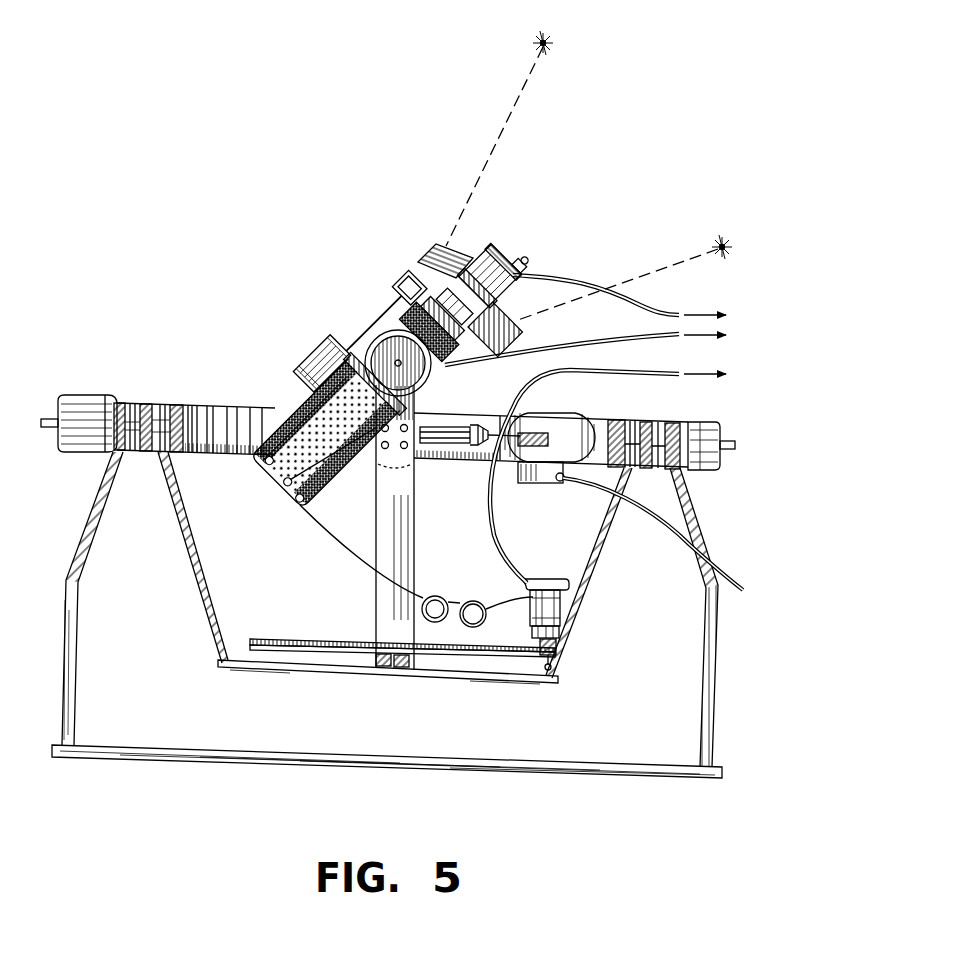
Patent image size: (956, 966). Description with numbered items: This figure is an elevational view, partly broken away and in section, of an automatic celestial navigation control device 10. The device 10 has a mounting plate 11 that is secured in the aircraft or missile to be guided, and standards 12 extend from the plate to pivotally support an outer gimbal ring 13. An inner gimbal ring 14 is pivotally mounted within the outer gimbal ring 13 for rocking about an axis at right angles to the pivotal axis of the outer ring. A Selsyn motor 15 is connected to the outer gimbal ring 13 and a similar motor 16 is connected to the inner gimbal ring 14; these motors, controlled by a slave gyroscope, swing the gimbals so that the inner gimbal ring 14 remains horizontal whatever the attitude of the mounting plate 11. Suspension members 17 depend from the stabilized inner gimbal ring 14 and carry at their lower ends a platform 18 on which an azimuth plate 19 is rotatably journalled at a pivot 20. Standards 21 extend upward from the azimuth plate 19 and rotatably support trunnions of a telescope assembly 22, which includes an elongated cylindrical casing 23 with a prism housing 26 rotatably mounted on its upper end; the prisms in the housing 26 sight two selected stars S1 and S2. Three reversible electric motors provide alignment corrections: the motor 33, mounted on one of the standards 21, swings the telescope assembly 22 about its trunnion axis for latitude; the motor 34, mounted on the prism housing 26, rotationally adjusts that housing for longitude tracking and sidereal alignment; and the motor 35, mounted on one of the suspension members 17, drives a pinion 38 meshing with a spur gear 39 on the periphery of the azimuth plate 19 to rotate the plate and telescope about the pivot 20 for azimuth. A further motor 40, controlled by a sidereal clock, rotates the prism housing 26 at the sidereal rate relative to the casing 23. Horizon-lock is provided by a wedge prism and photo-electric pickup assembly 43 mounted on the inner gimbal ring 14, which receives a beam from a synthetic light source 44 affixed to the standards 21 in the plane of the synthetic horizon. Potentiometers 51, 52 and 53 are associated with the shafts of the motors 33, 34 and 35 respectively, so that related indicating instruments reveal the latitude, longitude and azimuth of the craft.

The automatic celestial navigation control device 10 is at (399, 363).
The mounting plate 11 is at (258, 758).
The standards 12 is at (90, 520).
The outer gimbal ring 13 is at (662, 423).
The inner gimbal ring 14 is at (617, 427).
The Selsyn motor 15 is at (90, 398).
The Selsyn motor 16 is at (420, 409).
The suspension members 17 is at (183, 518).
The platform 18 is at (248, 662).
The azimuth plate 19 is at (263, 640).
The pivot 20 is at (403, 665).
The standards 21 is at (412, 528).
The telescope assembly 22 is at (378, 252).
The cylindrical casing 23 is at (432, 368).
The prism housing 26 is at (452, 246).
The reversible electric motor 33 is at (360, 350).
The reversible electric motor 34 is at (478, 262).
The reversible electric motor 35 is at (552, 634).
The pinion 38 is at (553, 648).
The spur gear 39 is at (470, 655).
The motor 40 is at (313, 357).
The wedge prism and photo-electric pickup assembly 43 is at (569, 412).
The synthetic light source 44 is at (440, 450).
The potentiometer 51 is at (362, 343).
The potentiometer 52 is at (507, 264).
The potentiometer 53 is at (532, 580).
The star S1 is at (733, 238).
The star S2 is at (555, 41).